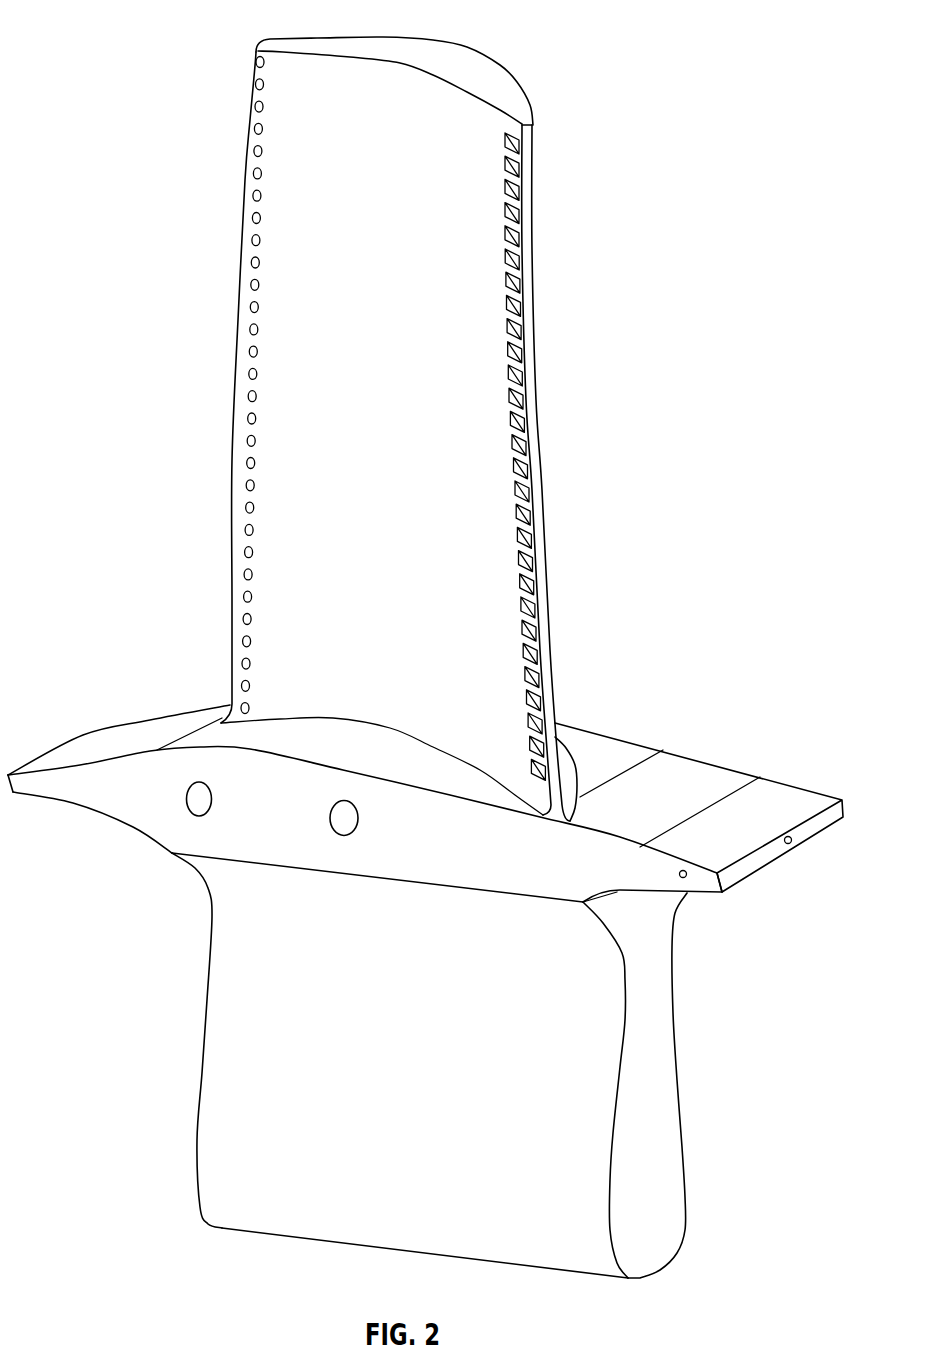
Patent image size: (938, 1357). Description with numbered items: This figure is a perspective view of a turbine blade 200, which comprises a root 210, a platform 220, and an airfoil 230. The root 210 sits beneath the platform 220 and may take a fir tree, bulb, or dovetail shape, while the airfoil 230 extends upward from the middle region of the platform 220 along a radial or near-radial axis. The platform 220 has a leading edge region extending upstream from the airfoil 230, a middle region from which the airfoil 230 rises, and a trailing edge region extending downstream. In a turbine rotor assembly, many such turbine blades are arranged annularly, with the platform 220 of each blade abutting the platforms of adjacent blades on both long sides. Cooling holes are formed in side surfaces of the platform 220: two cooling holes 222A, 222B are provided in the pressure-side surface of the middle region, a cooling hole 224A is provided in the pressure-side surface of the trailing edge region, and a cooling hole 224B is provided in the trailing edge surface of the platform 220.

The turbine blade 200 is at (124, 24).
The root 210 is at (657, 1013).
The platform 220 is at (720, 768).
The cooling hole 222A is at (192, 783).
The cooling hole 222B is at (337, 798).
The cooling hole 224A is at (686, 879).
The cooling hole 224B is at (791, 844).
The airfoil 230 is at (530, 457).